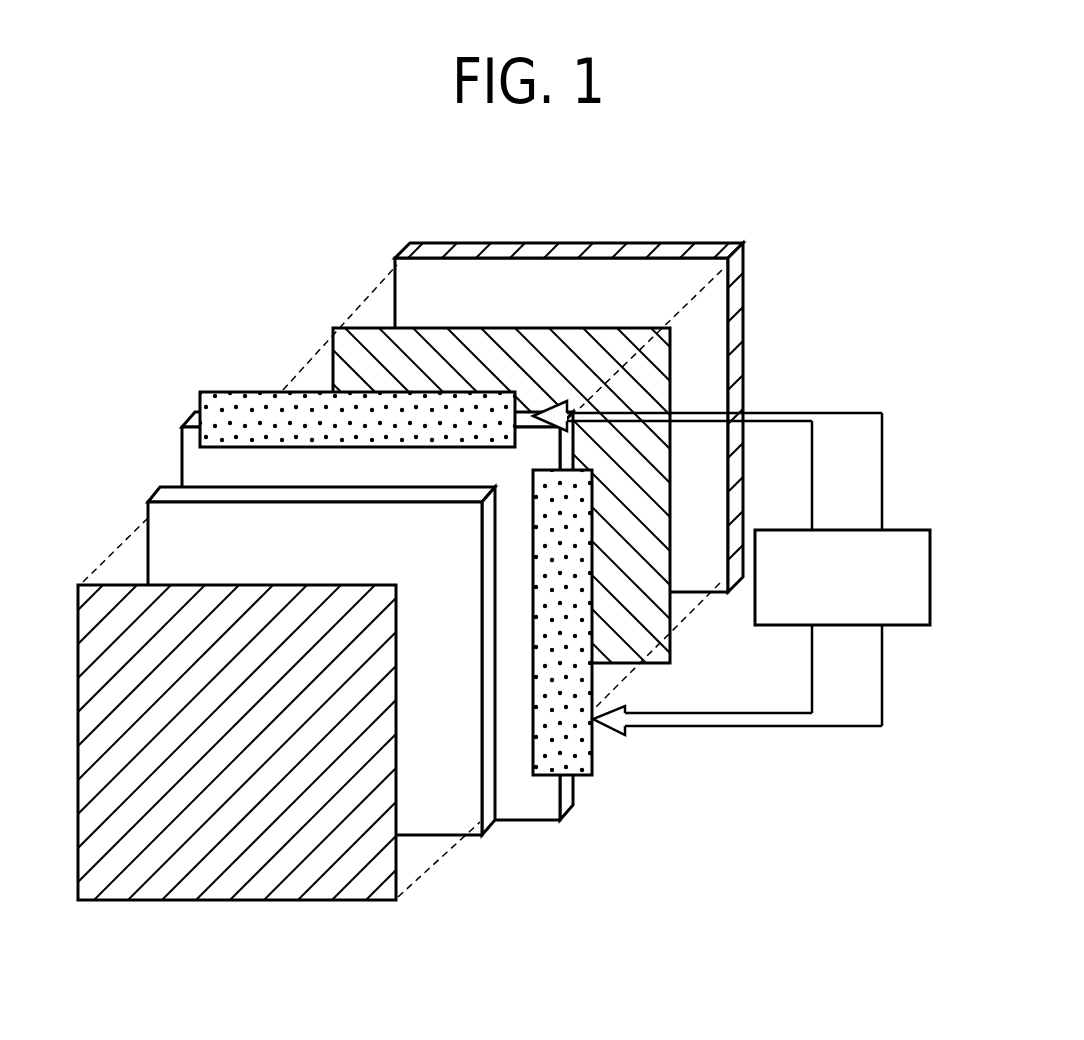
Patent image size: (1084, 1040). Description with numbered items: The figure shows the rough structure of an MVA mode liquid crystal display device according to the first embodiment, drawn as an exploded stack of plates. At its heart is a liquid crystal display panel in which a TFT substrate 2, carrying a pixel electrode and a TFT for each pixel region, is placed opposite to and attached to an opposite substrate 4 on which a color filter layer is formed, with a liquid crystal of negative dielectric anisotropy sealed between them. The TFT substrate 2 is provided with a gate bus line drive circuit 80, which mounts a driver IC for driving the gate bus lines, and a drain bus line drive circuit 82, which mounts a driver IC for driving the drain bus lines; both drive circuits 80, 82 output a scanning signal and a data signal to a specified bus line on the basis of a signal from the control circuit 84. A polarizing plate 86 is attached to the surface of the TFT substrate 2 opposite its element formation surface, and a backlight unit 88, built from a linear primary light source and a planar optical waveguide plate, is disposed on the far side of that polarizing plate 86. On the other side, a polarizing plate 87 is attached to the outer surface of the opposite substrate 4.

The TFT substrate 2 is at (537, 820).
The opposite substrate 4 is at (475, 835).
The gate bus line drive circuit 80 is at (593, 752).
The drain bus line drive circuit 82 is at (237, 392).
The control circuit 84 is at (913, 530).
The polarizing plate 86 is at (648, 623).
The polarizing plate 87 is at (241, 900).
The backlight unit 88 is at (743, 292).